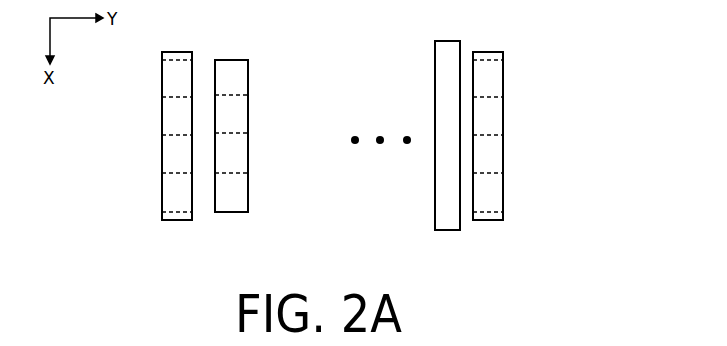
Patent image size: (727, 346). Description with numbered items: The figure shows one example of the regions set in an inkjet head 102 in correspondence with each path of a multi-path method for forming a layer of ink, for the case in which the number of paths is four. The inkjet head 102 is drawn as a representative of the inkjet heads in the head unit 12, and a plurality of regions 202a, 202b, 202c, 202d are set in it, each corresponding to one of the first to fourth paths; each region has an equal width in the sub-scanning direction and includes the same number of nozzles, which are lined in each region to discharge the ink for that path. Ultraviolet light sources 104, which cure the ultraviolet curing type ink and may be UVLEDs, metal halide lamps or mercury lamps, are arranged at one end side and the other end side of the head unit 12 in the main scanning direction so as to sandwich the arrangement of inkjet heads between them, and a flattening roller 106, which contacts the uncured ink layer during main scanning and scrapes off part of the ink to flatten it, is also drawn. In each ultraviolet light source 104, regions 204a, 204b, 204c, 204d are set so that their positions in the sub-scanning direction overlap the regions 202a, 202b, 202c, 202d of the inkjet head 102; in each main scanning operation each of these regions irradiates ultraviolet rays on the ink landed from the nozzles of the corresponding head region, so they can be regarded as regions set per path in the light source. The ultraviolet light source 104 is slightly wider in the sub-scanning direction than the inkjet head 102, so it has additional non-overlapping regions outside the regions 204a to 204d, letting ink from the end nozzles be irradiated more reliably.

The head unit 12 is at (581, 40).
The inkjet head 102 is at (233, 212).
The ultraviolet light source 104 is at (176, 220).
The flattening roller 106 is at (438, 230).
The region 202a is at (248, 73).
The region 202b is at (248, 122).
The region 202c is at (248, 158).
The region 202d is at (248, 200).
The region 204a is at (162, 79).
The region 204b is at (162, 117).
The region 204c is at (162, 153).
The region 204d is at (162, 196).